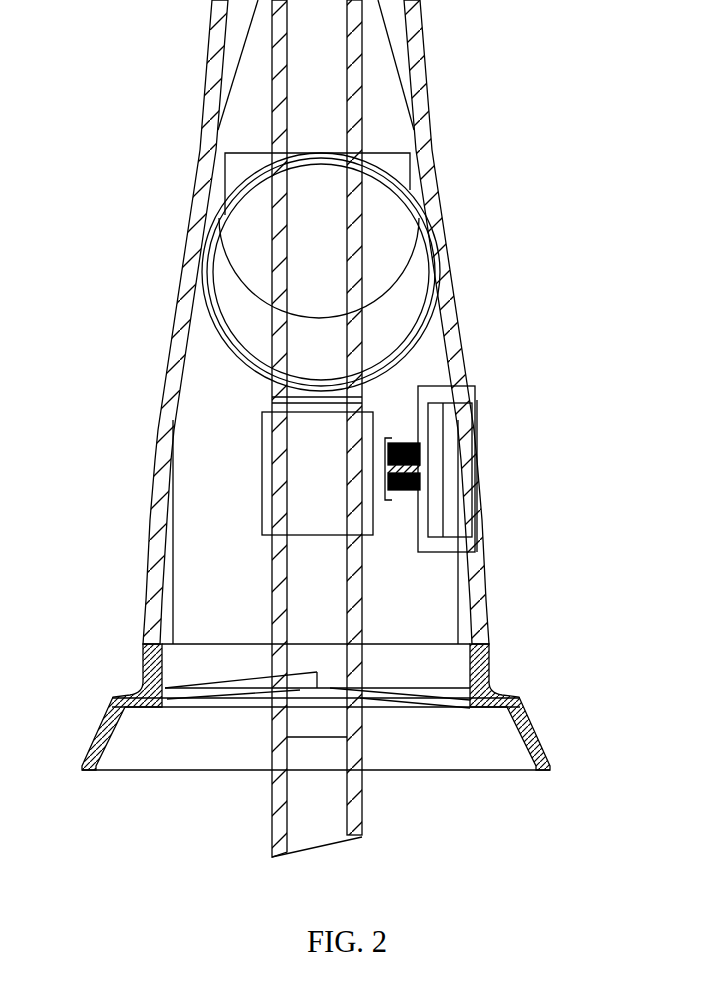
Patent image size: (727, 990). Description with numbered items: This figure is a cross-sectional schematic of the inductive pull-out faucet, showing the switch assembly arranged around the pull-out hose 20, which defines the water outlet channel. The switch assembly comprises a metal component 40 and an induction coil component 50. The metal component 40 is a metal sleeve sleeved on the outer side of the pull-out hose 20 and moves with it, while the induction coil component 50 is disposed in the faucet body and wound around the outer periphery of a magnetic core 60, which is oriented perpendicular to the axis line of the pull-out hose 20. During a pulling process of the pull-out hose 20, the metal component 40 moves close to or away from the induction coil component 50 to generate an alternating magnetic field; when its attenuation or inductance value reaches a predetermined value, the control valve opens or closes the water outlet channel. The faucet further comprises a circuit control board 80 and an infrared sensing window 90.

The pull-out hose 20 is at (244, 278).
The metal component 40 is at (210, 427).
The induction coil component 50 is at (492, 375).
The magnetic core 60 is at (513, 450).
The circuit control board 80 is at (523, 498).
The infrared sensing window 90 is at (530, 476).